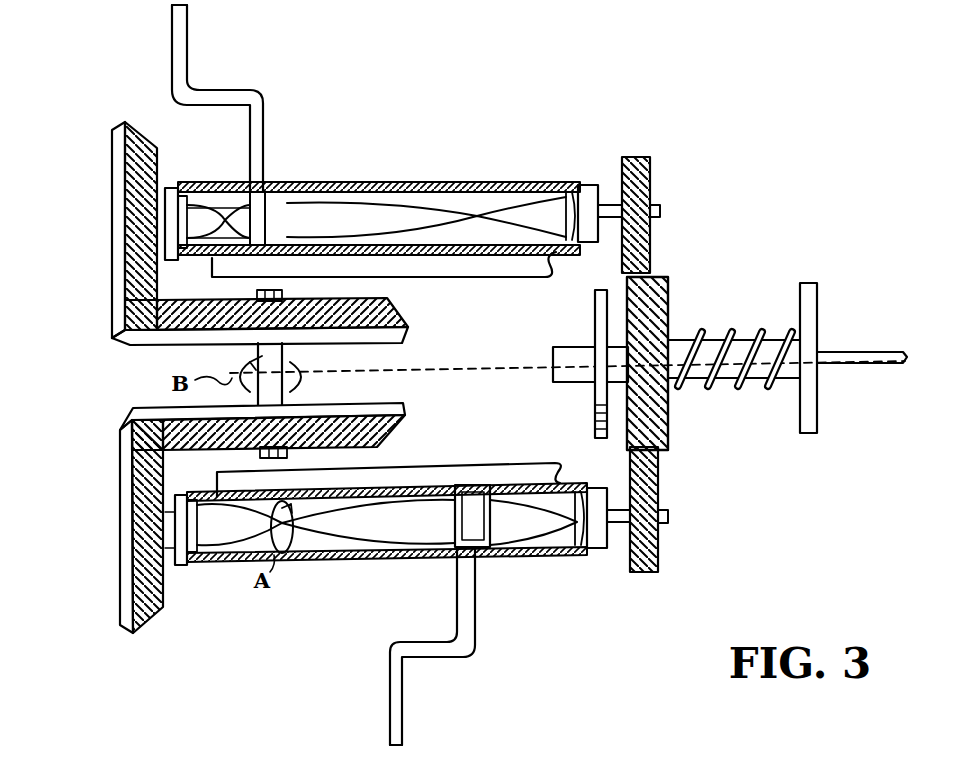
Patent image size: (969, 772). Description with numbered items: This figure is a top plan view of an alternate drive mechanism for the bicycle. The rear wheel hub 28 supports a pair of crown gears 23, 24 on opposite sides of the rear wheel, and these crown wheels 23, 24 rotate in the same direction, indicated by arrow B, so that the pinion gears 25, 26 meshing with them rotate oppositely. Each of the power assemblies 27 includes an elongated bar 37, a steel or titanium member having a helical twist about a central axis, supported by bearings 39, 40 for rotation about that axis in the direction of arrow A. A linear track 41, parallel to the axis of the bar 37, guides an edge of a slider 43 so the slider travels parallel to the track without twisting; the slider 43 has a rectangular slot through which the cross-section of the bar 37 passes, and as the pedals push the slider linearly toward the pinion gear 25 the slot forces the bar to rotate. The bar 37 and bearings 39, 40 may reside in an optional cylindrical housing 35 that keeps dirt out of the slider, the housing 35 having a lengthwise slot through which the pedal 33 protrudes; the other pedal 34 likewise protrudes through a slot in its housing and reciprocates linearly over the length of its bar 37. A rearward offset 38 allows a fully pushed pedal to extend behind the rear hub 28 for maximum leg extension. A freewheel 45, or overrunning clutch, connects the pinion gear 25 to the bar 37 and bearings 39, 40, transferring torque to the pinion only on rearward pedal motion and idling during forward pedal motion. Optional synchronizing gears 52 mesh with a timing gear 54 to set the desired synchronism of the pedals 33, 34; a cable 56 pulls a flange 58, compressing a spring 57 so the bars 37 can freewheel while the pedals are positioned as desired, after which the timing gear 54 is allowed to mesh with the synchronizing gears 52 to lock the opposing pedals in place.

The crown gear 23 is at (395, 426).
The crown gear 24 is at (400, 303).
The pinion gear 25 is at (124, 500).
The pinion gear 26 is at (121, 240).
The power assembly 27 is at (492, 300).
The rear wheel hub 28 is at (232, 360).
The pedal 33 is at (332, 200).
The pedal 34 is at (304, 71).
The cylindrical housing 35 is at (330, 560).
The elongated bar 37 is at (372, 213).
The rearward offset 38 is at (190, 90).
The bearing 39 is at (181, 200).
The bearing 40 is at (567, 196).
The linear track 41 is at (398, 462).
The slider 43 is at (470, 497).
The freewheel 45 is at (160, 200).
The synchronizing gears 52 is at (651, 188).
The timing gear 54 is at (653, 412).
The cable 56 is at (858, 352).
The spring 57 is at (726, 336).
The flange 58 is at (594, 402).